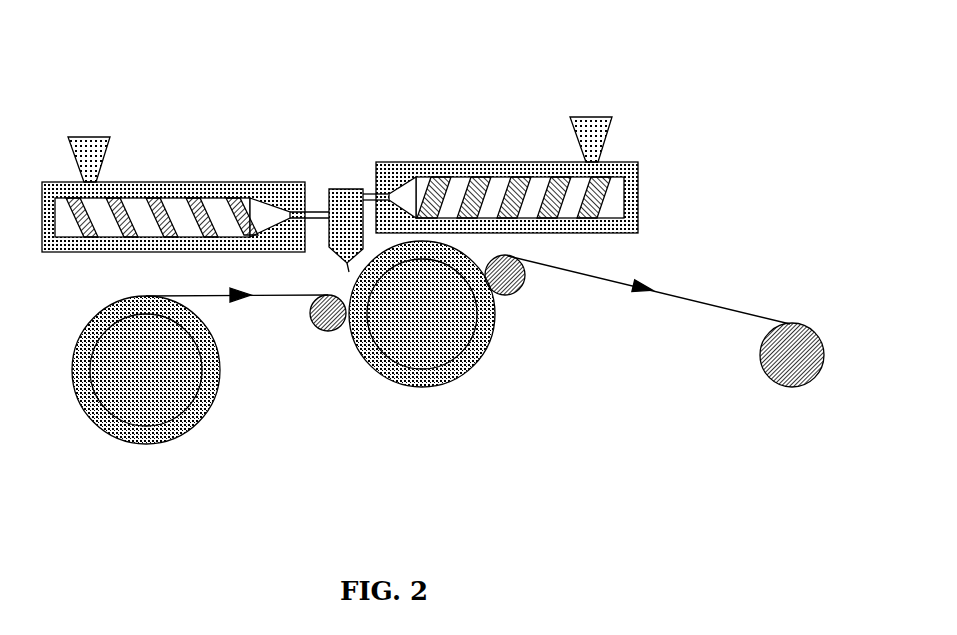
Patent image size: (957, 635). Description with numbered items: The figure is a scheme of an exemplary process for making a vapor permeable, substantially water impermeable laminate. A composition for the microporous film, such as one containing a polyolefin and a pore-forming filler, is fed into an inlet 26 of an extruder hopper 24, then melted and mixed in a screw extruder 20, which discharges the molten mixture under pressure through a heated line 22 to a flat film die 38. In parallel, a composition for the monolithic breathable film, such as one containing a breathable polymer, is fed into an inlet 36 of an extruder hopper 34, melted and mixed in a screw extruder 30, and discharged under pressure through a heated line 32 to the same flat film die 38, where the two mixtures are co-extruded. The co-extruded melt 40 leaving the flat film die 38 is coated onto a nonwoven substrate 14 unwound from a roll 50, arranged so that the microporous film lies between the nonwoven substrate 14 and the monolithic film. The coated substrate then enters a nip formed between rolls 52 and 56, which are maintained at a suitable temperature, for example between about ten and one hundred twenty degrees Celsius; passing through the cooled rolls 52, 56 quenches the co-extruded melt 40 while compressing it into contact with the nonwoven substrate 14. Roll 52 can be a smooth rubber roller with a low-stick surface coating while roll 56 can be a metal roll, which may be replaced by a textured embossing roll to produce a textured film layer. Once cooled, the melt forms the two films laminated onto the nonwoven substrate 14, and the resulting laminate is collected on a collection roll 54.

The nonwoven substrate 14 is at (278, 298).
The screw extruder 20 is at (183, 182).
The heated line 22 is at (316, 208).
The extruder hopper 24 is at (108, 150).
The inlet 26 is at (88, 137).
The screw extruder 30 is at (460, 162).
The heated line 32 is at (370, 190).
The extruder hopper 34 is at (612, 135).
The inlet 36 is at (595, 117).
The flat film die 38 is at (337, 189).
The co-extruded melt 40 is at (345, 272).
The roll 50 is at (100, 425).
The roll 52 is at (321, 332).
The collection roll 54 is at (762, 368).
The roll 56 is at (408, 389).